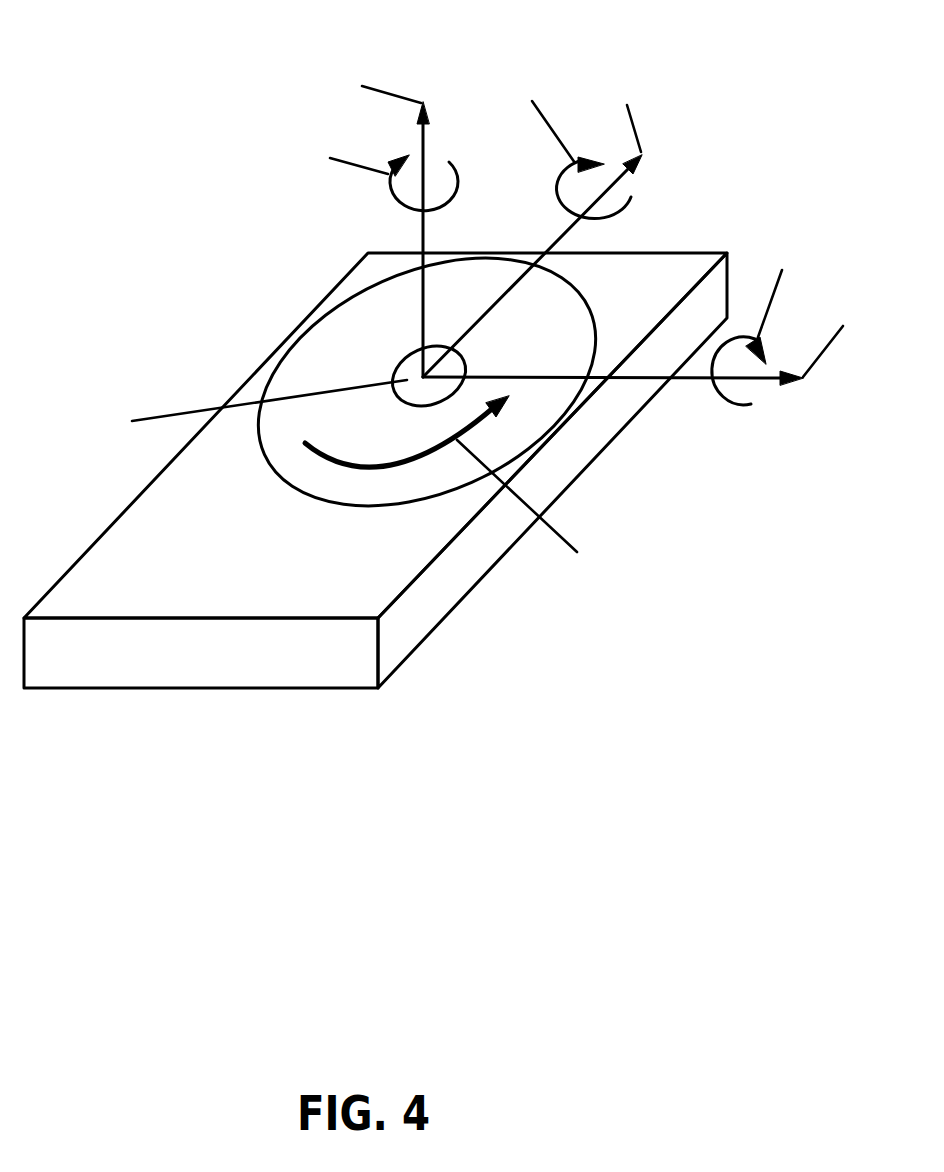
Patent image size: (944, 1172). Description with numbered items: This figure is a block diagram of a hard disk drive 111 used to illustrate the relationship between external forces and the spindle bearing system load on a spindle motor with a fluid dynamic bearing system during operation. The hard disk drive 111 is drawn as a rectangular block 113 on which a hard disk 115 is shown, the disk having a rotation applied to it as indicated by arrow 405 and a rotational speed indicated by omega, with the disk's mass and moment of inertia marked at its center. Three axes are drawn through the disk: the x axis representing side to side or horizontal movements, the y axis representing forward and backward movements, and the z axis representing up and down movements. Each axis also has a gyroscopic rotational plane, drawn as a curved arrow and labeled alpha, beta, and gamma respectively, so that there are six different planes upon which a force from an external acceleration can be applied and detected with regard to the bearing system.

The hard disk drive 111 is at (181, 52).
The base block 113 is at (405, 623).
The hard disk 115 is at (350, 347).
The arrow 405 is at (485, 418).